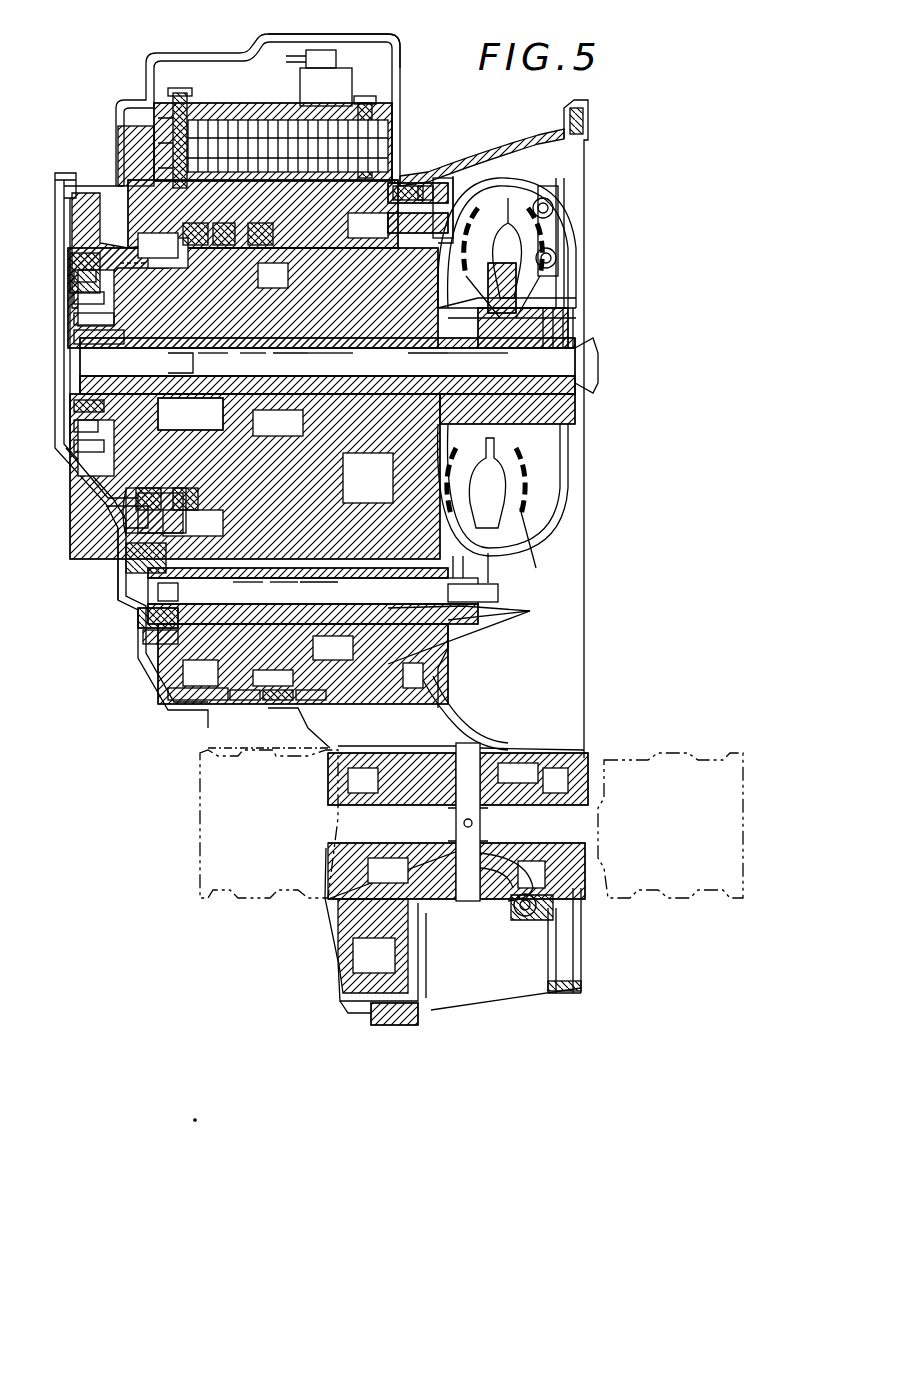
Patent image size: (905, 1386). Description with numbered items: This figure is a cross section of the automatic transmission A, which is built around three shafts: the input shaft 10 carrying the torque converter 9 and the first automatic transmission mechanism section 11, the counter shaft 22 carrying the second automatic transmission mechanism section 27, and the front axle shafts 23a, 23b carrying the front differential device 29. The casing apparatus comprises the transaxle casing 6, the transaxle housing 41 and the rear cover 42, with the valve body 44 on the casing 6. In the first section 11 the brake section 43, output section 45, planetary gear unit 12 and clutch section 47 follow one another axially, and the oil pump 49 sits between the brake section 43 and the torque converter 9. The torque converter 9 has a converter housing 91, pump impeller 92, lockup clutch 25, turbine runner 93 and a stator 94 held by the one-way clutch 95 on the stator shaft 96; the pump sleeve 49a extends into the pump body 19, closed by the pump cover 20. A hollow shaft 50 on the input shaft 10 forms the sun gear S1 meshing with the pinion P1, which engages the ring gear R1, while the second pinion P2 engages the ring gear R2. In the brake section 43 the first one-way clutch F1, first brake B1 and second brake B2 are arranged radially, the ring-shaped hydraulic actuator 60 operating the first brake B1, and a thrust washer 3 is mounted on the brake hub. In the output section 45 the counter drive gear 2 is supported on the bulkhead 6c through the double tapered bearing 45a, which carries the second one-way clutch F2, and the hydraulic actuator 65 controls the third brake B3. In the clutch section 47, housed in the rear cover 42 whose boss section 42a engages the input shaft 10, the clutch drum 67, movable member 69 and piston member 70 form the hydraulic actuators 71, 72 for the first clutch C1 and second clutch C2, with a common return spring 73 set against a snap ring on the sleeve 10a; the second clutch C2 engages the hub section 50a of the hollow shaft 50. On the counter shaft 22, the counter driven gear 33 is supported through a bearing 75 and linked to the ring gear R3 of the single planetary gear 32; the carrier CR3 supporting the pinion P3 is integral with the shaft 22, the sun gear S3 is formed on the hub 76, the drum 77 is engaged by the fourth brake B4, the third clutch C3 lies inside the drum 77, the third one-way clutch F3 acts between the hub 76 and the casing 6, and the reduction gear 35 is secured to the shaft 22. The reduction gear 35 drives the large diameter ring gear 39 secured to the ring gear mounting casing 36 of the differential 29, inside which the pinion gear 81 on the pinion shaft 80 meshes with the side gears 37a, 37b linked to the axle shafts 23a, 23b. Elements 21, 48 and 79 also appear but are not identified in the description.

The automatic transmission A is at (100, 76).
The counter drive gear 2 is at (305, 240).
The thrust washer 3 is at (360, 362).
The transaxle casing 6 is at (405, 175).
The bulkhead 6c is at (319, 363).
The torque converter 9 is at (505, 170).
The input shaft 10 is at (548, 395).
The sleeve 10a is at (68, 312).
The first automatic transmission mechanism section 11 is at (100, 180).
The planetary gear unit 12 is at (195, 224).
The pump body 19 is at (493, 363).
The pump cover 20 is at (445, 356).
The sleeve member 21 is at (418, 178).
The counter shaft 22 is at (130, 602).
The front axle shaft 23a is at (286, 880).
The front axle shaft 23b is at (630, 880).
The lockup clutch 25 is at (550, 212).
The second automatic transmission mechanism section 27 is at (106, 512).
The front differential device 29 is at (490, 742).
The single planetary gear 32 is at (269, 742).
The counter driven gear 33 is at (310, 712).
The reduction gear 35 is at (415, 668).
The ring gear mounting casing 36 is at (440, 726).
The side gear 37a is at (420, 920).
The side gear 37b is at (545, 905).
The large diameter ring gear 39 is at (363, 1002).
The transaxle housing 41 is at (513, 132).
The rear cover 42 is at (108, 538).
The boss section 42a is at (68, 330).
The brake section 43 is at (358, 92).
The valve body 44 is at (208, 92).
The output section 45 is at (262, 112).
The double tapered bearing 45a is at (304, 356).
The clutch section 47 is at (122, 238).
The cover wall 48 is at (262, 30).
The oil pump 49 is at (450, 168).
The pump sleeve 49a is at (475, 571).
The hollow shaft 50 is at (268, 356).
The hub section 50a is at (105, 492).
The hydraulic actuator 60 is at (560, 282).
The hydraulic actuator 65 is at (240, 112).
The clutch drum 67 is at (68, 268).
The movable member 69 is at (68, 418).
The piston member 70 is at (68, 438).
The hydraulic actuator 71 is at (68, 398).
The hydraulic actuator 72 is at (75, 455).
The spring 73 is at (68, 292).
The bearing 75 is at (323, 596).
The hub 76 is at (190, 593).
The drum 77 is at (225, 690).
The clutch drum 79 is at (175, 640).
The pinion shaft 80 is at (460, 893).
The pinion gear 81 is at (505, 893).
The converter housing 91 is at (486, 556).
The pump impeller 92 is at (459, 626).
The turbine runner 93 is at (520, 548).
The stator 94 is at (555, 470).
The one-way clutch 95 is at (550, 328).
The stator shaft 96 is at (480, 356).
The first brake B1 is at (493, 284).
The second brake B2 is at (400, 178).
The third brake B3 is at (225, 224).
The fourth brake B4 is at (262, 690).
The first clutch C1 is at (155, 250).
The second clutch C2 is at (70, 258).
The third clutch C3 is at (185, 688).
The first one-way clutch F1 is at (341, 363).
The second one-way clutch F2 is at (250, 238).
The third one-way clutch F3 is at (120, 550).
The pinion P1 is at (232, 356).
The second pinion P2 is at (190, 412).
The pinion P3 is at (284, 593).
The ring gear R1 is at (145, 489).
The ring gear R2 is at (180, 489).
The ring gear R3 is at (295, 692).
The sun gear S1 is at (180, 363).
The sun gear S3 is at (248, 593).
The carrier CR3 is at (319, 593).